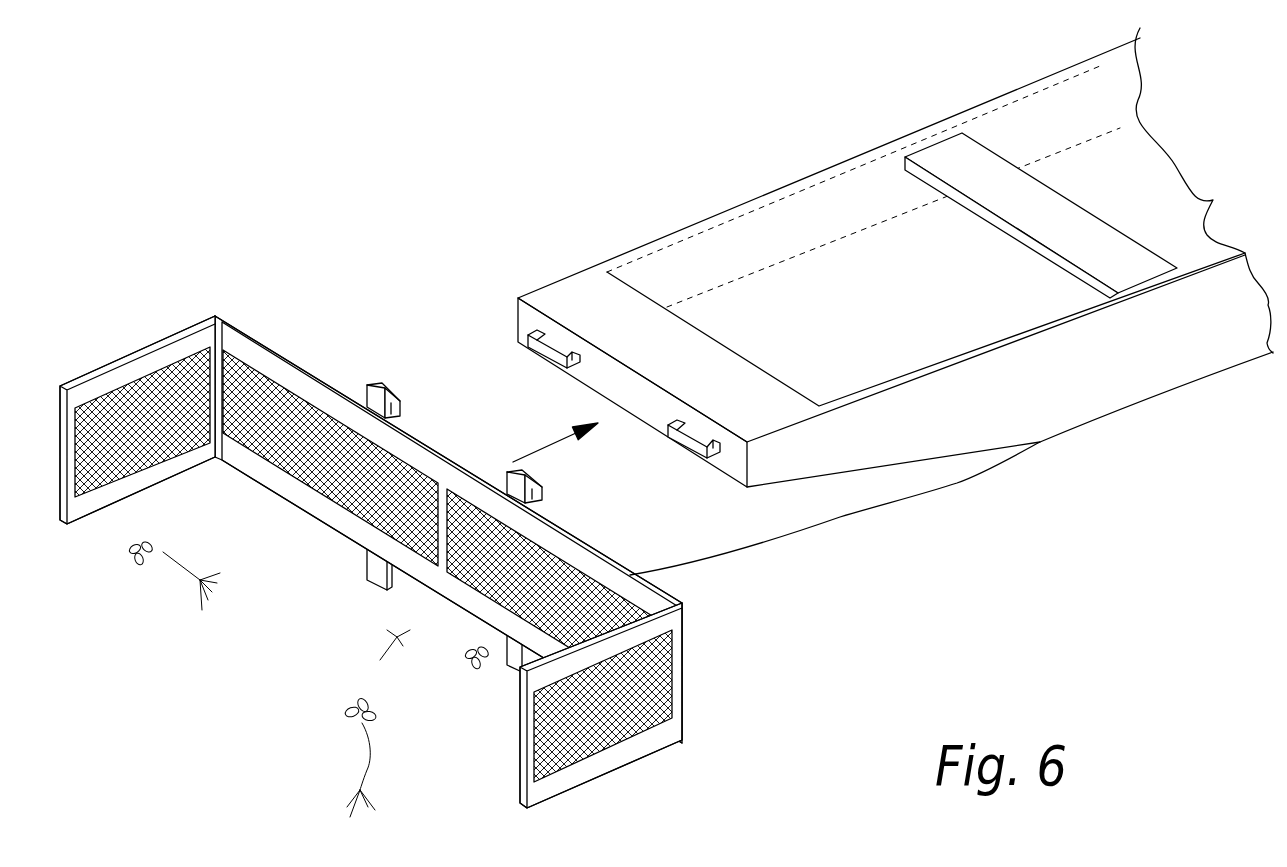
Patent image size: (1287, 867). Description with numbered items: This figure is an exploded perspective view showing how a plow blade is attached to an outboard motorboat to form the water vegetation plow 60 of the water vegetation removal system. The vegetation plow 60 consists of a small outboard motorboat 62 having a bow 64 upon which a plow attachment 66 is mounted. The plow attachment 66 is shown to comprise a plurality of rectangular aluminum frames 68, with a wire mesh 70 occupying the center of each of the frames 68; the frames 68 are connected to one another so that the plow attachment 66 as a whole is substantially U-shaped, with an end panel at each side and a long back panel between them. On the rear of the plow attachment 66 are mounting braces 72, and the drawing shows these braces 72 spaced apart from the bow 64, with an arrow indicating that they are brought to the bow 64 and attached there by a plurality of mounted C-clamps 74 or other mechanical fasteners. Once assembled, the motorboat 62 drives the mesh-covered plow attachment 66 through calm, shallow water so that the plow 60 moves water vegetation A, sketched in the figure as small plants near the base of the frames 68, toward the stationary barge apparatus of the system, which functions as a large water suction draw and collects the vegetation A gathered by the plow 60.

The water vegetation plow 60 is at (381, 188).
The outboard motorboat 62 is at (740, 193).
The bow 64 is at (585, 305).
The plow attachment 66 is at (135, 340).
The rectangular aluminum frames 68 is at (262, 347).
The wire mesh 70 is at (292, 447).
The mounting braces 72 is at (372, 400).
The C-clamps 74 is at (543, 352).
The water vegetation A is at (332, 753).